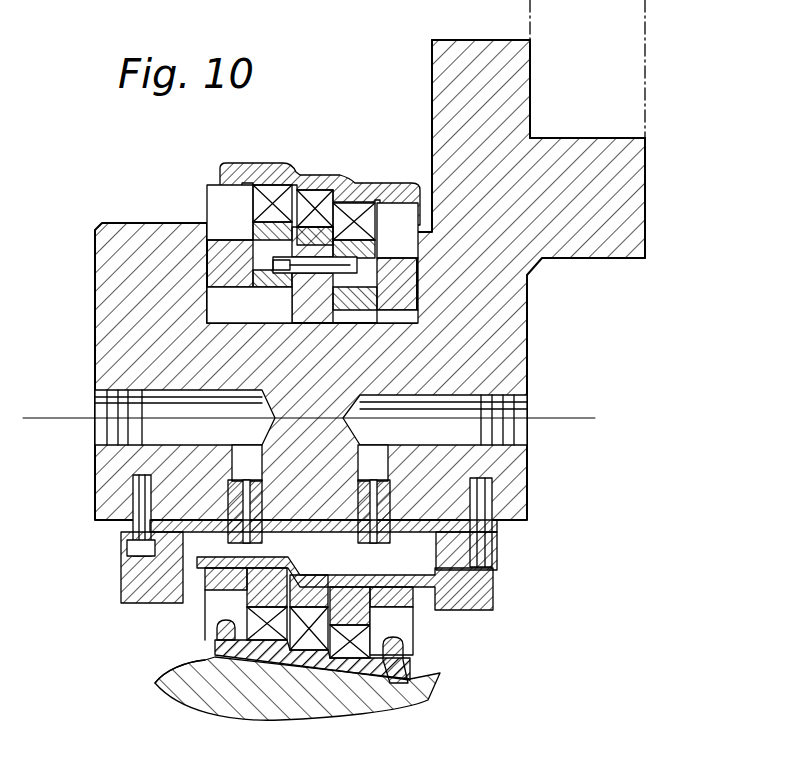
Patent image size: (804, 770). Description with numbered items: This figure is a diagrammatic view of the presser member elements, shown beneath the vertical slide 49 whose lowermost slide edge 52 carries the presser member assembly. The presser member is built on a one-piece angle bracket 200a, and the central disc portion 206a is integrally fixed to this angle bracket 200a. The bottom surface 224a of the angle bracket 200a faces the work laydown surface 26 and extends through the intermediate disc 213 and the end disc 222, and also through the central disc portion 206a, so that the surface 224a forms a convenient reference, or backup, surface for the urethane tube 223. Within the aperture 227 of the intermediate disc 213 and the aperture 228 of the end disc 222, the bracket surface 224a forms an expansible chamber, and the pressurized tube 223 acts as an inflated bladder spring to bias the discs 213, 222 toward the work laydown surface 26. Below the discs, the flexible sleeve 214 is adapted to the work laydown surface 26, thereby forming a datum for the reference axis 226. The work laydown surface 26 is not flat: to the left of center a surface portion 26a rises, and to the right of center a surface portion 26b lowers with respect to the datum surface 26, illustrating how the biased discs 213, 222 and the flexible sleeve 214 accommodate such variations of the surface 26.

The vertical slide 49 is at (645, 23).
The lowermost slide edge 52 is at (622, 142).
The one-piece angle bracket 200a is at (640, 256).
The end disc 222 is at (205, 258).
The intermediate disc 213 is at (250, 277).
The aperture 227 is at (262, 288).
The aperture 228 is at (208, 290).
The central disc portion 206a is at (325, 285).
The reference axis 226 is at (58, 421).
The bottom surface 224a is at (518, 522).
The urethane tube 223 is at (495, 598).
The flexible sleeve 214 is at (212, 648).
The work laydown surface 26 is at (262, 705).
The surface portion 26a is at (160, 680).
The surface portion 26b is at (438, 675).